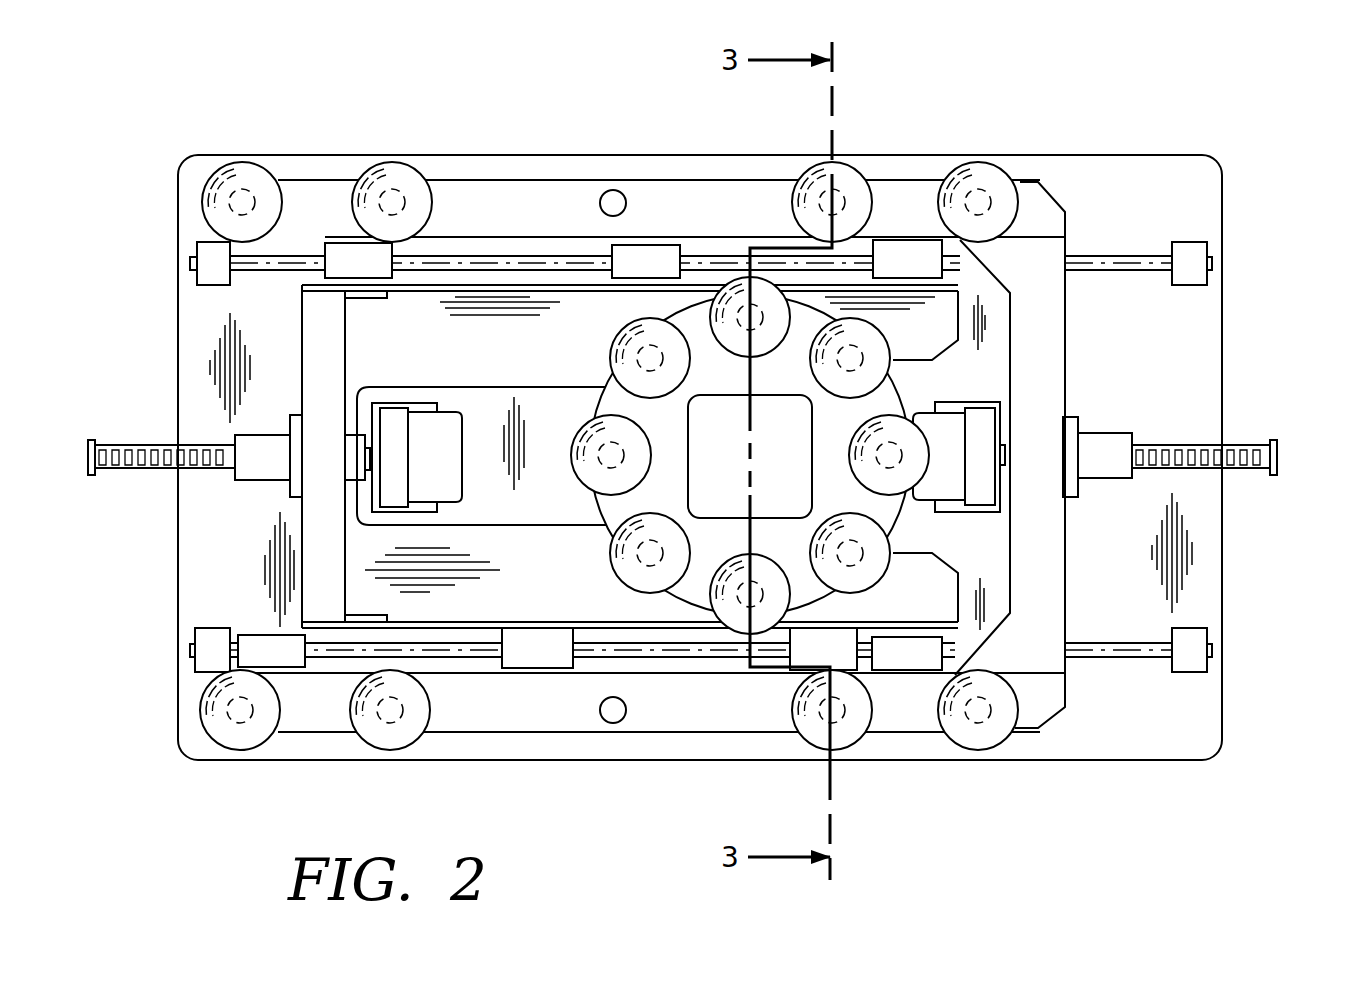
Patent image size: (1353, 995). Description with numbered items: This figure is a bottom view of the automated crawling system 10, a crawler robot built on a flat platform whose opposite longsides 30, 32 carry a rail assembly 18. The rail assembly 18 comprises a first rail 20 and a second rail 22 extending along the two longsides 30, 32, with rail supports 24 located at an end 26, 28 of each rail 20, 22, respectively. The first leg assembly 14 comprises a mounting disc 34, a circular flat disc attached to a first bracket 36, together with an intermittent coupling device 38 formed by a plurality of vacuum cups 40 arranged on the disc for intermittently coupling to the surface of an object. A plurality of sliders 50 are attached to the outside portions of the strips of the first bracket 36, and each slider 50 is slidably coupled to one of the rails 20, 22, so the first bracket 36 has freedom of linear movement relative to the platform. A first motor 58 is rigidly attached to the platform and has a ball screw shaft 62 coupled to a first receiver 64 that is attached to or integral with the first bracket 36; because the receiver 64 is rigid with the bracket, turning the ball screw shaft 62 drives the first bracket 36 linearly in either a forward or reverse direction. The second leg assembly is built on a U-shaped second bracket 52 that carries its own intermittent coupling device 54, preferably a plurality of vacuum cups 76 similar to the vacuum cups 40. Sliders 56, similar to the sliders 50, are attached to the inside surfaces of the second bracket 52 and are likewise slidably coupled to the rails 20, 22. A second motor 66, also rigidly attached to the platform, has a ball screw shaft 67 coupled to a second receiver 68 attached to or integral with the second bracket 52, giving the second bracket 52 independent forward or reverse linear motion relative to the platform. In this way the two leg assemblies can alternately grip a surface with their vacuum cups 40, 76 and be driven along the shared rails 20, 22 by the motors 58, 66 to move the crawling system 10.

The automated crawling system 10 is at (148, 144).
The first leg assembly 14 is at (600, 333).
The rail assembly 18 is at (1155, 678).
The first rail 20 is at (1122, 255).
The second rail 22 is at (1122, 656).
The rail supports 24 is at (1190, 274).
The end of first rail 26 is at (1214, 263).
The end of second rail 28 is at (188, 263).
The longside of platform 30 is at (279, 155).
The longside of platform 32 is at (280, 762).
The mounting disc 34 is at (697, 327).
The first bracket 36 is at (937, 577).
The intermittent coupling device 38 is at (728, 288).
The vacuum cups 40 is at (635, 583).
The sliders 50 is at (650, 253).
The second bracket 52 is at (458, 197).
The intermittent coupling device 54 is at (859, 163).
The sliders 56 is at (339, 250).
The first motor 58 is at (443, 433).
The ball screw shaft 62 is at (112, 444).
The first receiver 64 is at (253, 465).
The second motor 66 is at (950, 423).
The ball screw shaft 67 is at (1243, 470).
The second receiver 68 is at (1117, 440).
The vacuum cups 76 is at (997, 180).